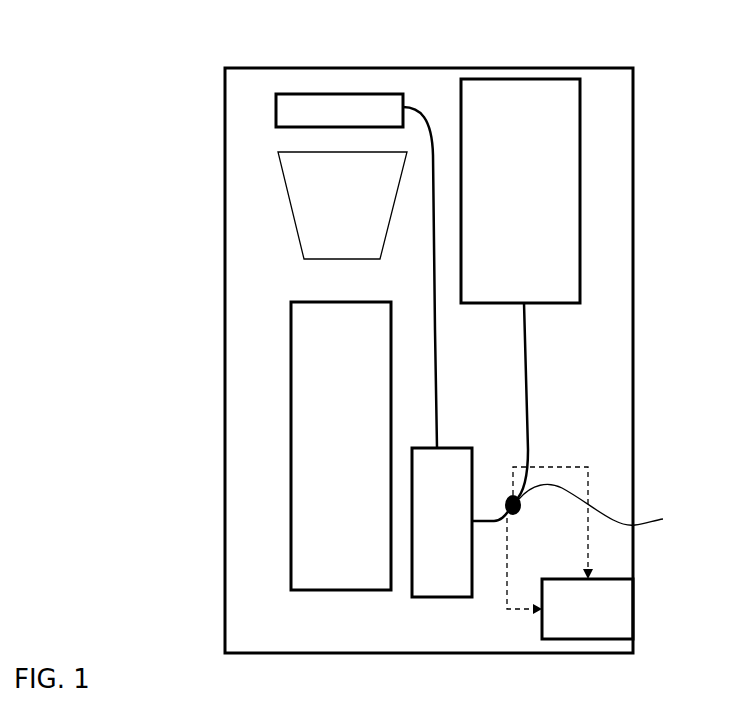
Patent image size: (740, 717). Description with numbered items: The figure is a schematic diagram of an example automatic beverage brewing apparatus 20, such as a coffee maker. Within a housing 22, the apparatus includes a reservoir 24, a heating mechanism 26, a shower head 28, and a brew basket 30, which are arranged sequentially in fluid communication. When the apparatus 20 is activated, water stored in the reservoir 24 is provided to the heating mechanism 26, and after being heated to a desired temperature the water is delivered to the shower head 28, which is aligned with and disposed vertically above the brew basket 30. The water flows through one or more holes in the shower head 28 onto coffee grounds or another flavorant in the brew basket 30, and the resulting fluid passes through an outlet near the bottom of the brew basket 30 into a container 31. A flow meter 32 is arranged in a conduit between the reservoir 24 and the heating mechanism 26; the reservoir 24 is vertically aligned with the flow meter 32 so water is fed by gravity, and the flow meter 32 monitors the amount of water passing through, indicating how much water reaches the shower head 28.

The beverage brewing apparatus 20 is at (131, 82).
The housing 22 is at (597, 122).
The reservoir 24 is at (520, 191).
The heating mechanism 26 is at (442, 522).
The shower head 28 is at (338, 103).
The brew basket 30 is at (342, 205).
The container 31 is at (341, 446).
The flow meter 32 is at (607, 504).